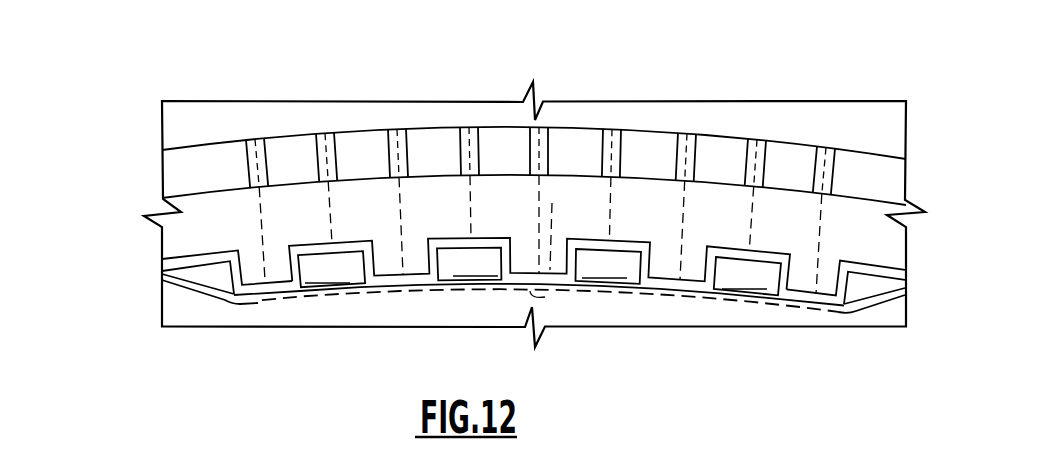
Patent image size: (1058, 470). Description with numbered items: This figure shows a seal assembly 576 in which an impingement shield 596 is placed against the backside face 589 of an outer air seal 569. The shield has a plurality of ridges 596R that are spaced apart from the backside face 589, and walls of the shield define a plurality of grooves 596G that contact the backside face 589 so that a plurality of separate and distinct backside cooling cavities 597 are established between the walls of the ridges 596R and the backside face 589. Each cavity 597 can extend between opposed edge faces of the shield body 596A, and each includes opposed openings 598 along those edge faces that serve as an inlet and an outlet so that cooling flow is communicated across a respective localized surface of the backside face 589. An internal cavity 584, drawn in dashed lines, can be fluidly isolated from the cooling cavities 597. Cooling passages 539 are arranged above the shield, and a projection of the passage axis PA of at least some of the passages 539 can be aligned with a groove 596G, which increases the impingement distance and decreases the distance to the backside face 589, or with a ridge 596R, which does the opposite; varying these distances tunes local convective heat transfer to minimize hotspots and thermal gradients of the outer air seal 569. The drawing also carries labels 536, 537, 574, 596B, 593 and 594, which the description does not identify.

The seal assembly 576 is at (168, 74).
The carrier 536 is at (182, 170).
The carrier support ring 537 is at (534, 190).
The cooling passages 539 is at (316, 152).
The passage axis PA is at (327, 223).
The gap space 574 is at (527, 206).
The internal cavity 584 is at (562, 198).
The impingement shield 596 is at (205, 258).
The seal member end portion 596B is at (177, 260).
The grooves 596G is at (379, 268).
The ridges 596R is at (506, 268).
The shield body 596A is at (576, 272).
The backside cooling cavities 597 is at (203, 279).
The opposed openings 598 is at (358, 255).
The backside face 589 is at (636, 283).
The backing sheet 593 is at (750, 308).
The backing sheet end 594 is at (533, 296).
The outer air seal 569 is at (188, 311).